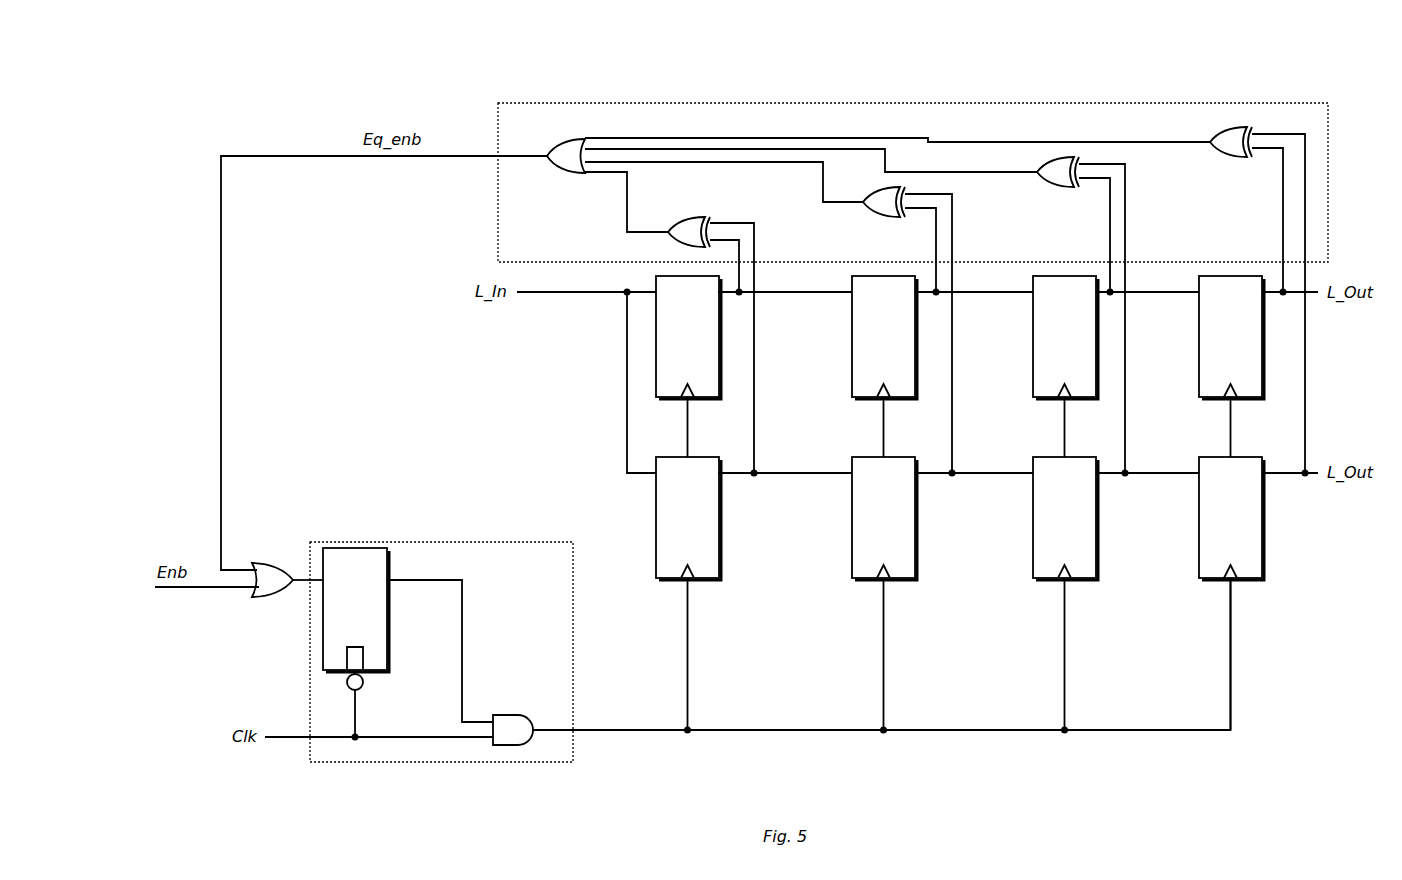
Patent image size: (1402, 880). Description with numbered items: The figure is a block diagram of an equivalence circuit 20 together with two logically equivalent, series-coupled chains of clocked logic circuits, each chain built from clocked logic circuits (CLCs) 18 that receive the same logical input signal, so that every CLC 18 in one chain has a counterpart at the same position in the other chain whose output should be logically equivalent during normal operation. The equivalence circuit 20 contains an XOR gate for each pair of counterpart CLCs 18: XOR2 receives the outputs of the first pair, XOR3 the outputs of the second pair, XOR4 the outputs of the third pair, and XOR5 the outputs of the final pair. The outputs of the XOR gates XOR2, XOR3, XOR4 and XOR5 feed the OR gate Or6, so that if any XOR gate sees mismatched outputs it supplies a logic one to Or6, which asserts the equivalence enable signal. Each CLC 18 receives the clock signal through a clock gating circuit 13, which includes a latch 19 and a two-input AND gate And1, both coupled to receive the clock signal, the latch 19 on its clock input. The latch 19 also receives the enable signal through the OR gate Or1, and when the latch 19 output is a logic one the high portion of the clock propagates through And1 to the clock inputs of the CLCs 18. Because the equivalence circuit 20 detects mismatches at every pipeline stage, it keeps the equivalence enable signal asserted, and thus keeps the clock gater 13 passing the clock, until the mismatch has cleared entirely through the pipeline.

The equivalence circuit 20 is at (903, 94).
The clock gating circuit 13 is at (430, 536).
The clocked logic circuit (CLC) 18 is at (679, 361).
The latch 19 is at (346, 635).
The OR gate Or6 is at (558, 146).
The XOR gate XOR2 is at (683, 218).
The XOR gate XOR3 is at (873, 213).
The XOR gate XOR4 is at (1050, 190).
The XOR gate XOR5 is at (1232, 160).
The OR gate Or1 is at (272, 560).
The 2-input AND gate And1 is at (507, 712).